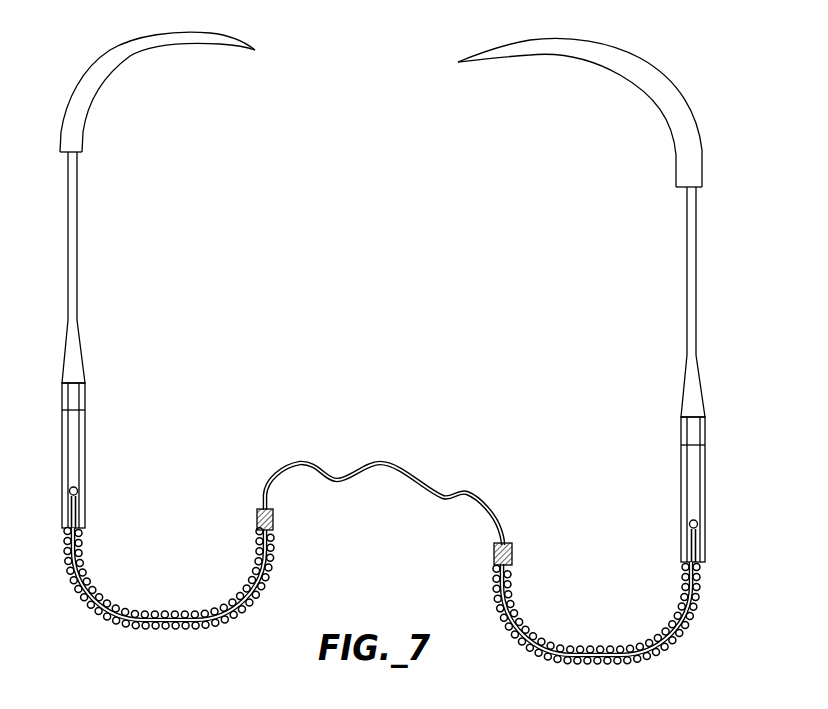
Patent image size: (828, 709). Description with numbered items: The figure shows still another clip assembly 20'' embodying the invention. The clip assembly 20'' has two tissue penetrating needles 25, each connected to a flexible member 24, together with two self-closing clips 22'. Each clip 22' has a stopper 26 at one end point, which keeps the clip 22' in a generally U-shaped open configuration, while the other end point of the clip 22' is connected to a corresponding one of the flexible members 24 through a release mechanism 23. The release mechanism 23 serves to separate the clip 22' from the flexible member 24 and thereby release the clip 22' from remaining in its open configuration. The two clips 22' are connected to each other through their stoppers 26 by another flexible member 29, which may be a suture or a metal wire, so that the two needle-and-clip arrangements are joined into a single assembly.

The clip assembly 20'' is at (372, 66).
The self-closing clip 22' is at (382, 594).
The release mechanism 23 is at (86, 497).
The flexible member 24 is at (78, 192).
The tissue penetrating needle 25 is at (110, 85).
The stopper 26 is at (257, 511).
The flexible member 29 is at (382, 464).